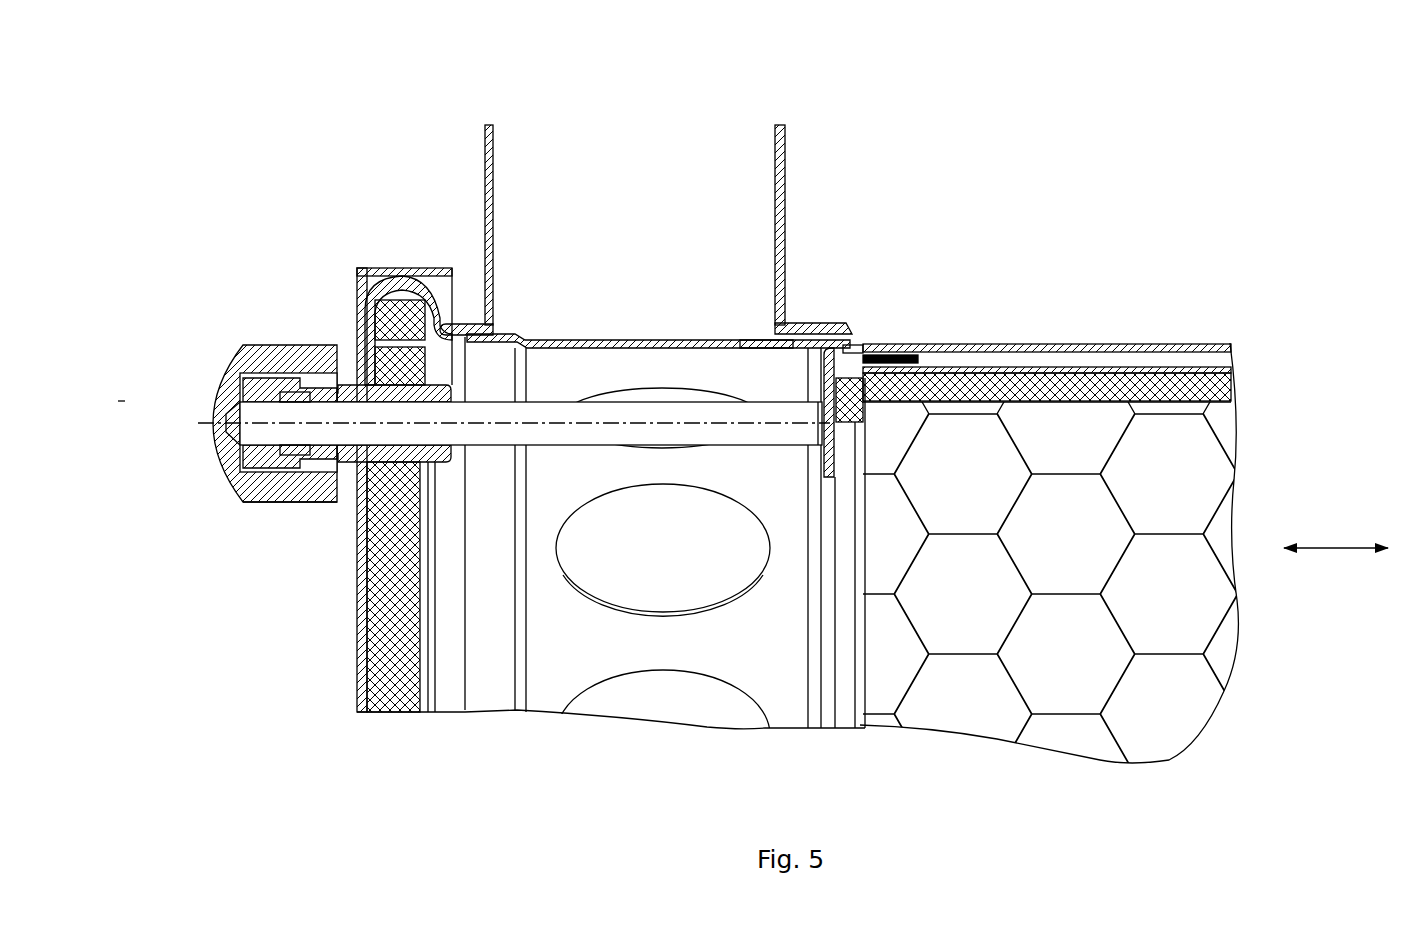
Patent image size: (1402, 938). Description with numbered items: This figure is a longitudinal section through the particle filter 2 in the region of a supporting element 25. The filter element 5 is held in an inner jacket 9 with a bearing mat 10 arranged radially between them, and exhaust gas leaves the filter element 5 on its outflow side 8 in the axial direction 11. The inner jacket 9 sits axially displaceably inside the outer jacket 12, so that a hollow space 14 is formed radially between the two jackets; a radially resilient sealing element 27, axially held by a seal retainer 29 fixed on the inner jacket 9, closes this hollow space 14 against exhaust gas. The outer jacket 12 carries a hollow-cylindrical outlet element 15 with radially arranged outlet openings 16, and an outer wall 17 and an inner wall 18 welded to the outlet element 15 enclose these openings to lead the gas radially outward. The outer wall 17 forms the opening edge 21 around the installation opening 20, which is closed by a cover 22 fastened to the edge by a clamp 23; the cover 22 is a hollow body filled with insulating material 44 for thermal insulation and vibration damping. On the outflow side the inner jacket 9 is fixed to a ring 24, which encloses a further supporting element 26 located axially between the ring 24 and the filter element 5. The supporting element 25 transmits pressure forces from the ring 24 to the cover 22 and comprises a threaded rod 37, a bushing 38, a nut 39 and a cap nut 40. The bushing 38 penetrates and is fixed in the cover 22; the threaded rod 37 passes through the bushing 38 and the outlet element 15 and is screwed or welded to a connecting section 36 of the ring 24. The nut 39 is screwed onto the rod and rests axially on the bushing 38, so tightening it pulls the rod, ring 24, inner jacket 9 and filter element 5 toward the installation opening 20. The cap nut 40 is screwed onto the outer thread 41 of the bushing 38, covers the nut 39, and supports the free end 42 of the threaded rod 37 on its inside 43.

The particle filter 2 is at (1216, 226).
The filter element 5 is at (1054, 539).
The outflow side 8 is at (858, 224).
The inner jacket 9 is at (1108, 364).
The bearing mat 10 is at (1228, 385).
The axial direction 11 is at (1337, 547).
The outer jacket 12 is at (1026, 342).
The hollow space 14 is at (1222, 348).
The outlet element 15 is at (659, 338).
The outlet openings 16 is at (652, 562).
The outer wall 17 is at (489, 124).
The inner wall 18 is at (781, 124).
The installation opening 20 is at (452, 673).
The opening edge 21 is at (462, 323).
The cover 22 is at (356, 621).
The clamp 23 is at (398, 270).
The ring 24 is at (819, 338).
The supporting element 25 is at (195, 402).
The supporting element 26 is at (837, 390).
The sealing element 27 is at (893, 356).
The seal retainer 29 is at (856, 349).
The connecting section 36 is at (832, 464).
The threaded rod 37 is at (615, 400).
The bushing 38 is at (453, 465).
The nut 39 is at (294, 393).
The cap nut 40 is at (240, 340).
The outer thread 41 is at (305, 373).
The free end 42 is at (228, 430).
The inside 43 is at (245, 502).
The insulating material 44 is at (357, 590).